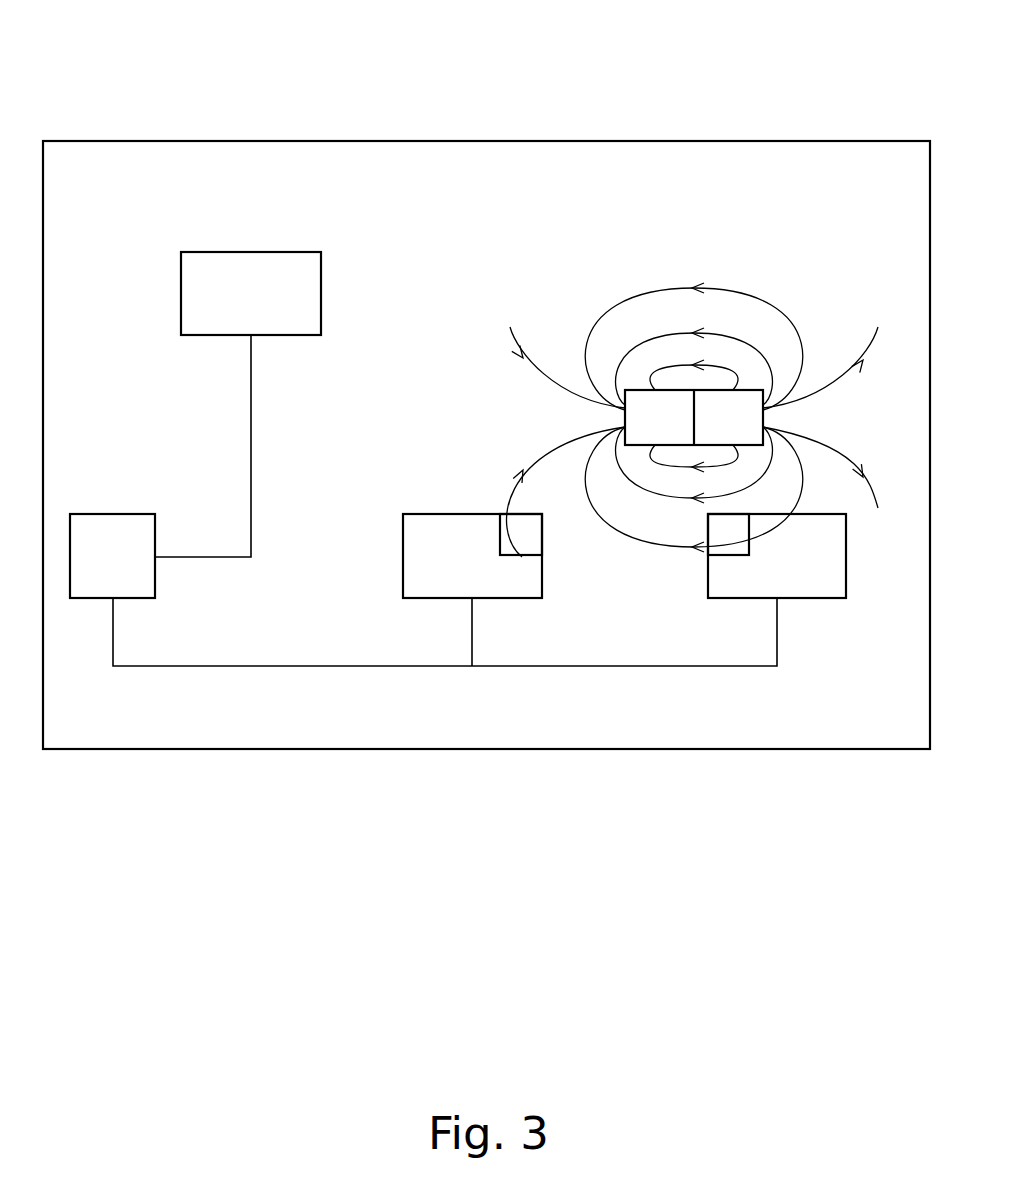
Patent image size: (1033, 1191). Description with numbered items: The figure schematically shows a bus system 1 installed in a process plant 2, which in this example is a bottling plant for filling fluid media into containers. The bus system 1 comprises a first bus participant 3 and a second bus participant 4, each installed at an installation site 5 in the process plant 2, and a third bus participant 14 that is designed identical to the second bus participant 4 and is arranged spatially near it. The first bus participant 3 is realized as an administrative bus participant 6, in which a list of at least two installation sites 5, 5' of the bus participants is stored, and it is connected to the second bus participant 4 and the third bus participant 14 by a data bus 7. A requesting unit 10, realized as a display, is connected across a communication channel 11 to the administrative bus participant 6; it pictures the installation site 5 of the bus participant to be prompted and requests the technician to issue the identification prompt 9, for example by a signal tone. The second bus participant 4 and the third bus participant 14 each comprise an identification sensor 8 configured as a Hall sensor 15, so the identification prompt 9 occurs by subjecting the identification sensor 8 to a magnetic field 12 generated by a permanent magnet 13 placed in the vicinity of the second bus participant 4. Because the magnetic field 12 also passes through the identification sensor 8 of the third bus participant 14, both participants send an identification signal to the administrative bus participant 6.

The bus system 1 is at (445, 737).
The process plant 2 is at (582, 118).
The first bus participant 3 is at (103, 446).
The second bus participant 4 is at (794, 695).
The installation site 5 is at (80, 742).
The first sensor unit 5' is at (415, 742).
The administrative bus participant 6 is at (112, 514).
The data bus 7 is at (350, 667).
The identification sensor 8 is at (563, 695).
The identification prompt 9 is at (692, 286).
The requesting unit 10 is at (237, 278).
The communication channel 11 is at (251, 445).
The magnetic field 12 is at (752, 272).
The permanent magnet 13 is at (750, 398).
The third bus participant 14 is at (511, 695).
The Hall sensor 15 is at (520, 543).